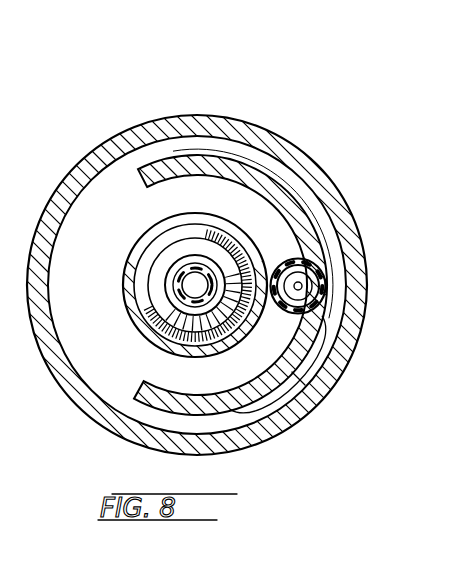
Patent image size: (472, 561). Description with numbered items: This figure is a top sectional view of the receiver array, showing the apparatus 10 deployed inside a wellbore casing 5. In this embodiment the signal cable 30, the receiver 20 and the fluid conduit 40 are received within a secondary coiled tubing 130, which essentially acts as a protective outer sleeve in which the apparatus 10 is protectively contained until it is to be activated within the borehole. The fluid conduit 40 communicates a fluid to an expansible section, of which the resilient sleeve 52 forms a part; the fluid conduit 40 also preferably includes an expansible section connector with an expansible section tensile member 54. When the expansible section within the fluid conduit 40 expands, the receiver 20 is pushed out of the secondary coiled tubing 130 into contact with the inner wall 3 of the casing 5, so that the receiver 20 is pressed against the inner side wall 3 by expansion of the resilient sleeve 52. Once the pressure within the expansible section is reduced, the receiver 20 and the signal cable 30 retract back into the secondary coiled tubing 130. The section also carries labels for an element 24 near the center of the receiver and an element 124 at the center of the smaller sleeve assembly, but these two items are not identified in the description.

The apparatus 10 is at (236, 249).
The secondary coiled tubing 130 is at (160, 172).
The inner wall 3 is at (50, 230).
The signal cable 30 is at (182, 263).
The hub / shaft 24 is at (155, 282).
The receiver 20 is at (112, 300).
The resilient sleeve 52 is at (309, 236).
The expansible section tensile member 54 is at (283, 313).
The fluid conduit 40 is at (336, 233).
The idler shaft 124 is at (302, 287).
The casing 5 is at (283, 430).